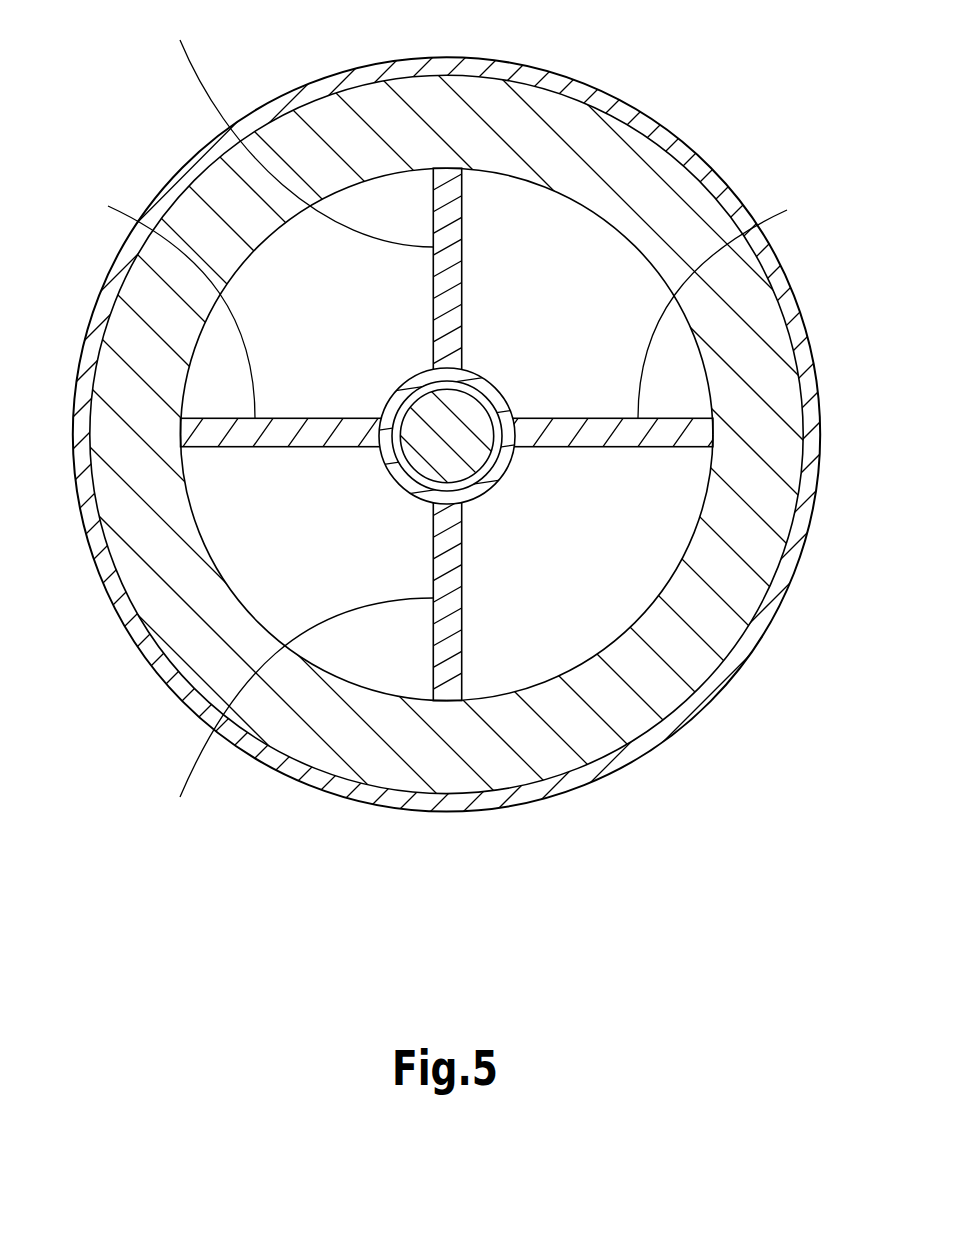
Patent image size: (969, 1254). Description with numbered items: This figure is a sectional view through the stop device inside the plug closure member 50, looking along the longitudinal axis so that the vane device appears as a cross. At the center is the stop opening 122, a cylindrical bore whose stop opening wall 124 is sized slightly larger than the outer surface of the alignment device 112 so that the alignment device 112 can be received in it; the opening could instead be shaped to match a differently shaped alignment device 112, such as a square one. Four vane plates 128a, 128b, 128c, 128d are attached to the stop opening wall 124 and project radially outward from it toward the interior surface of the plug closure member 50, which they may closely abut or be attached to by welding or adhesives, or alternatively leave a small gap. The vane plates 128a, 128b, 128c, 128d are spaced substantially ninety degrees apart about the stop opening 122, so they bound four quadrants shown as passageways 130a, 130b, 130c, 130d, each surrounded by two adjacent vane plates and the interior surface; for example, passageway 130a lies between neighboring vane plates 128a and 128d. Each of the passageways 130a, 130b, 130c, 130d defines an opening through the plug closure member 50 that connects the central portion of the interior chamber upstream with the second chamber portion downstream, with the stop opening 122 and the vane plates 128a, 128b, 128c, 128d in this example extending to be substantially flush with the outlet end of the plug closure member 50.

The plug closure member 50 is at (690, 143).
The alignment device 112 is at (463, 478).
The stop opening wall 124 is at (500, 479).
The stop opening 122 is at (412, 472).
The vane plate 128a is at (743, 307).
The vane plate 128b is at (292, 129).
The vane plate 128c is at (148, 305).
The vane plate 128d is at (291, 713).
The passageway 130a is at (606, 575).
The passageway 130b is at (608, 328).
The passageway 130c is at (363, 327).
The passageway 130d is at (363, 573).